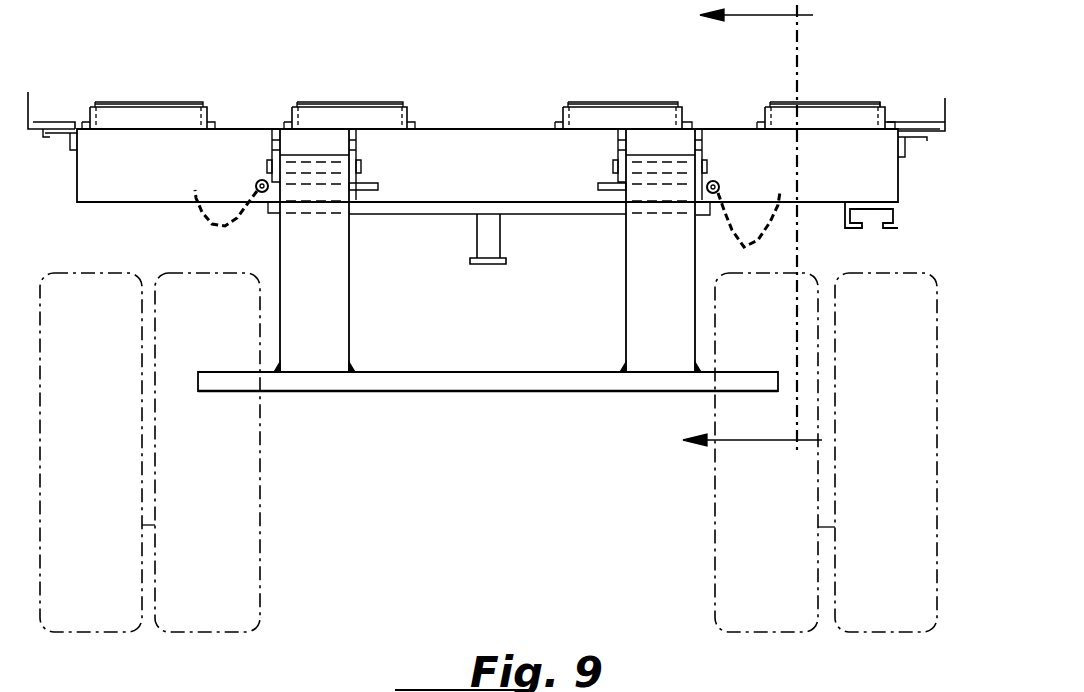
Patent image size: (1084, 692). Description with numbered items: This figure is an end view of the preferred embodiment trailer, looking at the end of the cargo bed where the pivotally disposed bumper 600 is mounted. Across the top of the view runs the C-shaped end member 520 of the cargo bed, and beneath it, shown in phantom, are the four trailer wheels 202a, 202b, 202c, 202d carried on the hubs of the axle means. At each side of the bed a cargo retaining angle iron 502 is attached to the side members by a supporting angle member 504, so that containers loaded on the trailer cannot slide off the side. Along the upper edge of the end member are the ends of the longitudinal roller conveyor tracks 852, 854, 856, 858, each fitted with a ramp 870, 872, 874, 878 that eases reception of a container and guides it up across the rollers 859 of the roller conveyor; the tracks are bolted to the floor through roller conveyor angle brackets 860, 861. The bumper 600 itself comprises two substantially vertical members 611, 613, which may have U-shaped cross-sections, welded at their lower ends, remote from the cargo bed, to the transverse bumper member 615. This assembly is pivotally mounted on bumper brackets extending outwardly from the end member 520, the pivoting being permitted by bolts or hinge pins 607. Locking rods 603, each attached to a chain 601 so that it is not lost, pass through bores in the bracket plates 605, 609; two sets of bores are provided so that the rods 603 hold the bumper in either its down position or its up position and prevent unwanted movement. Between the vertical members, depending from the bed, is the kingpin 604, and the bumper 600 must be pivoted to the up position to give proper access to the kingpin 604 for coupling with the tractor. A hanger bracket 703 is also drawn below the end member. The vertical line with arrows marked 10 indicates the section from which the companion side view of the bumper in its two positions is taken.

The section line 10— 10 is at (736, 231).
The wheel 202a is at (117, 592).
The wheel 202b is at (232, 600).
The wheel 202c is at (787, 603).
The wheel 202d is at (902, 603).
The cargo retaining angle iron 502 is at (35, 95).
The supporting angle member 504 is at (70, 142).
The C-shaped end member 520 is at (113, 177).
The bumper 600 is at (488, 304).
The chain 601 is at (218, 230).
The locking rod 603 is at (368, 192).
The kingpin 604 is at (492, 238).
The plate 605 is at (358, 137).
The hinge pin 607 is at (267, 157).
The plate 609 is at (276, 128).
The vertical member 611 is at (332, 313).
The vertical member 613 is at (645, 308).
The transverse bumper member 615 is at (458, 385).
The hanger channel 703 is at (897, 224).
The conveyor track 852 is at (172, 95).
The conveyor track 854 is at (380, 93).
The conveyor track 856 is at (630, 100).
The conveyor track 858 is at (873, 100).
The roller 859 is at (842, 105).
The roller conveyor angle bracket 860 is at (892, 127).
The roller conveyor angle bracket 861 is at (757, 123).
The ramp 870 is at (812, 117).
The ramp 872 is at (593, 118).
The ramp 874 is at (328, 112).
The ramp 878 is at (123, 112).